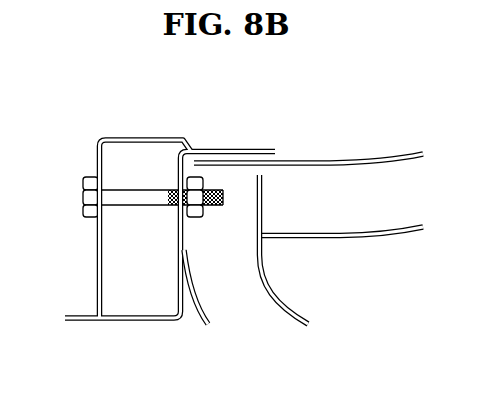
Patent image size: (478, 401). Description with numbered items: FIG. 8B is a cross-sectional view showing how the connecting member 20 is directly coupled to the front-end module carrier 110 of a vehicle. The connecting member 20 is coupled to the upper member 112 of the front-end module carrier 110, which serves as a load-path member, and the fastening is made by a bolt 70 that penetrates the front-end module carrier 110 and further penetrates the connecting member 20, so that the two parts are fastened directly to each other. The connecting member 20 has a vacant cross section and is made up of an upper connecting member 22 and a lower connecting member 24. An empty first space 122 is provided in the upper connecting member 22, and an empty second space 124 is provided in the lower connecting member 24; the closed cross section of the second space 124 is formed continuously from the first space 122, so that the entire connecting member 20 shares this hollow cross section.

The front-end module carrier 110 is at (170, 194).
The upper member 112 is at (143, 138).
The bolt 70 is at (88, 197).
The connecting member 20 is at (312, 206).
The upper connecting member 22 is at (302, 160).
The first space 122 is at (330, 201).
The lower connecting member 24 is at (278, 302).
The second space 124 is at (234, 274).